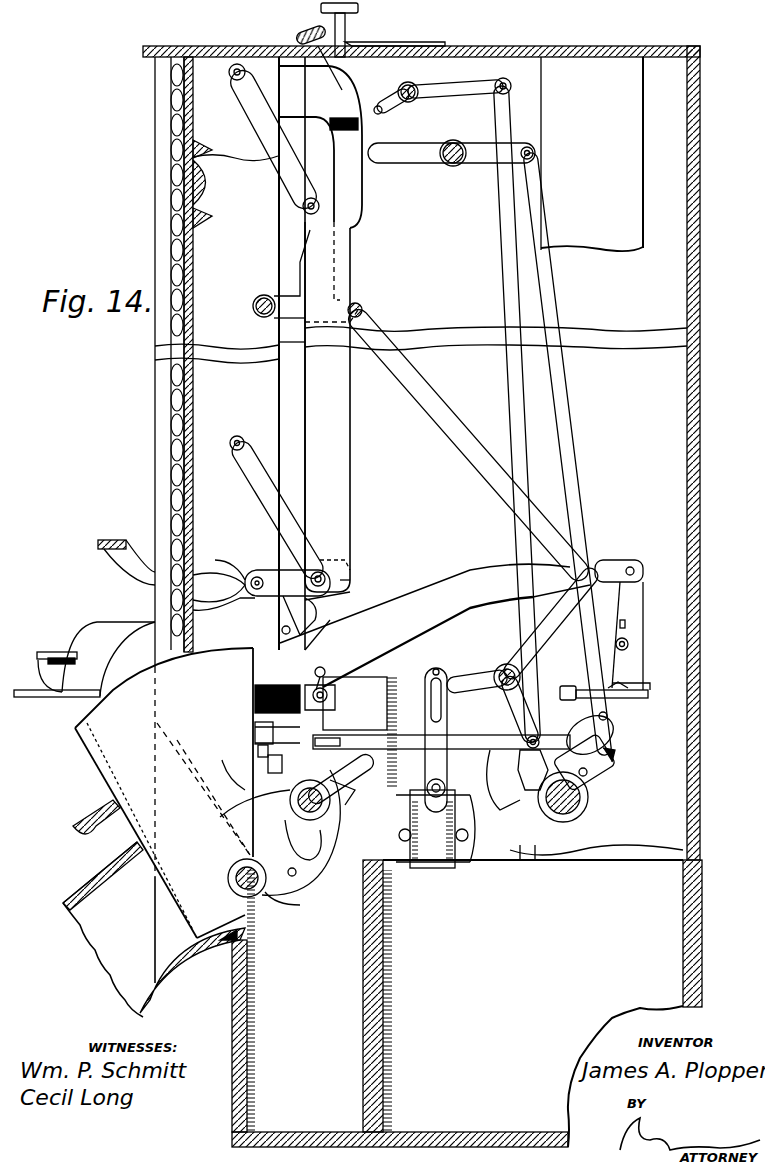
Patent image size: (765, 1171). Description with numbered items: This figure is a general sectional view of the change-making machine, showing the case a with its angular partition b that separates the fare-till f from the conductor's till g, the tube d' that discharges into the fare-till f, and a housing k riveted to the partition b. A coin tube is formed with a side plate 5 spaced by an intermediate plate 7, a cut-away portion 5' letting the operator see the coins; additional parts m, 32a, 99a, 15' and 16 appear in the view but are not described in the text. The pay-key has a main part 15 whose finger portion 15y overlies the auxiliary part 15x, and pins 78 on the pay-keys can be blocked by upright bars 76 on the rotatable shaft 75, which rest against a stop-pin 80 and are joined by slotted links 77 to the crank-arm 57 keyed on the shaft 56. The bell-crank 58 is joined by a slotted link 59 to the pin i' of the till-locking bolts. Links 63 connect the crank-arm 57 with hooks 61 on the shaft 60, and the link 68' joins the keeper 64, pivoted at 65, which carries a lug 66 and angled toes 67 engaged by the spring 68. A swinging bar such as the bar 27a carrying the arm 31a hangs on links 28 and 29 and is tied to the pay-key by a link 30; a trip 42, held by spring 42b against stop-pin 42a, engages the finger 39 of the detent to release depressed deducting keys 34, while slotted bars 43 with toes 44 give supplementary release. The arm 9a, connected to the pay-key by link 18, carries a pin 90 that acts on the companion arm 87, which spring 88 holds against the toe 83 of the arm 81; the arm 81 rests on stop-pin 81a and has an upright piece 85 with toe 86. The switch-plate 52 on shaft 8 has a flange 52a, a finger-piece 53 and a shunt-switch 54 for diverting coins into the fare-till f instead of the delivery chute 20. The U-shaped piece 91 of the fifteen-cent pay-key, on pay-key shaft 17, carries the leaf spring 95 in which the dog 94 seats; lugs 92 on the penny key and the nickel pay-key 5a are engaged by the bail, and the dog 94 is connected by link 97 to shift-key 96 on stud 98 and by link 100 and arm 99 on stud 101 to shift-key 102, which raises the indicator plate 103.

The shift-key 102 is at (358, 8).
The indicator plate 103 is at (445, 42).
The shift-key 96 is at (297, 38).
The stud 98 is at (412, 100).
The arm 99 is at (400, 164).
The stud 101 is at (450, 165).
The pivot 99a is at (520, 165).
The link 97 is at (512, 225).
The link 100 is at (555, 300).
The rigid hook 61 is at (345, 175).
The bar 27a is at (350, 462).
The link 28 is at (292, 158).
The cut-away portion 5' is at (240, 128).
The intermediate plate 7 is at (246, 190).
The side plate 5 is at (227, 385).
The rotatable shaft 60 is at (258, 312).
The link 63 is at (425, 400).
The link 29 is at (278, 505).
The chain m is at (178, 475).
The deducting key 34 is at (104, 540).
The arm 31a is at (278, 572).
The arm 32a is at (248, 575).
The nickel pay-key 5a is at (250, 605).
The stop-pin 42a is at (348, 560).
The spring 42b is at (348, 580).
The trip 42 is at (330, 592).
The finger 39 is at (310, 615).
The link 30 is at (305, 622).
The auxiliary part of pay-key 15x is at (528, 862).
The member 15' is at (596, 865).
The pay-key 15 is at (157, 659).
The finger portion 15y is at (62, 656).
The switch-plate 52 is at (164, 793).
The shunt-switch 54 is at (155, 735).
The perpendicular flange 52a is at (100, 765).
The finger-piece 53 is at (73, 826).
The delivery chute 20 is at (109, 929).
The case a is at (429, 622).
The shaft 8 is at (236, 877).
The link 18 is at (298, 880).
The arm 9a is at (325, 873).
The arm 81 is at (300, 818).
The stop-pin 81a is at (240, 825).
The rotatable shaft 75 is at (313, 840).
The companion arm 87 is at (360, 770).
The spring 88 is at (340, 800).
The upright piece 85 is at (268, 773).
The lateral toe 86 is at (258, 755).
The stop-pin 80 is at (225, 767).
The lateral toe 44 is at (255, 743).
The slotted bar 43 is at (255, 727).
The pin 90 is at (259, 700).
The pin 78 is at (314, 678).
The upright bar 76 is at (330, 700).
The box 16 is at (333, 715).
The lateral toe 83 is at (349, 729).
The slotted link 77 is at (468, 735).
The slotted link 59 is at (425, 710).
The pin i' is at (454, 769).
The bell-crank 58 is at (463, 680).
The shaft 56 is at (507, 665).
The crank-arm 57 is at (520, 705).
The link 68' is at (619, 611).
The lug 66 is at (626, 624).
The pivot 65 is at (628, 643).
The keeper 64 is at (621, 672).
The lateral toe 67 is at (612, 688).
The spring 68 is at (617, 702).
The dog 94 is at (590, 735).
The leaf spring 95 is at (612, 752).
The U-shaped piece 91 is at (610, 772).
The pay-key shaft 17 is at (575, 808).
The lug 92 is at (517, 780).
The housing k is at (435, 829).
The angular partition b is at (405, 942).
The fare-till f is at (329, 961).
The conductor's till g is at (463, 965).
The tube d' is at (658, 106).